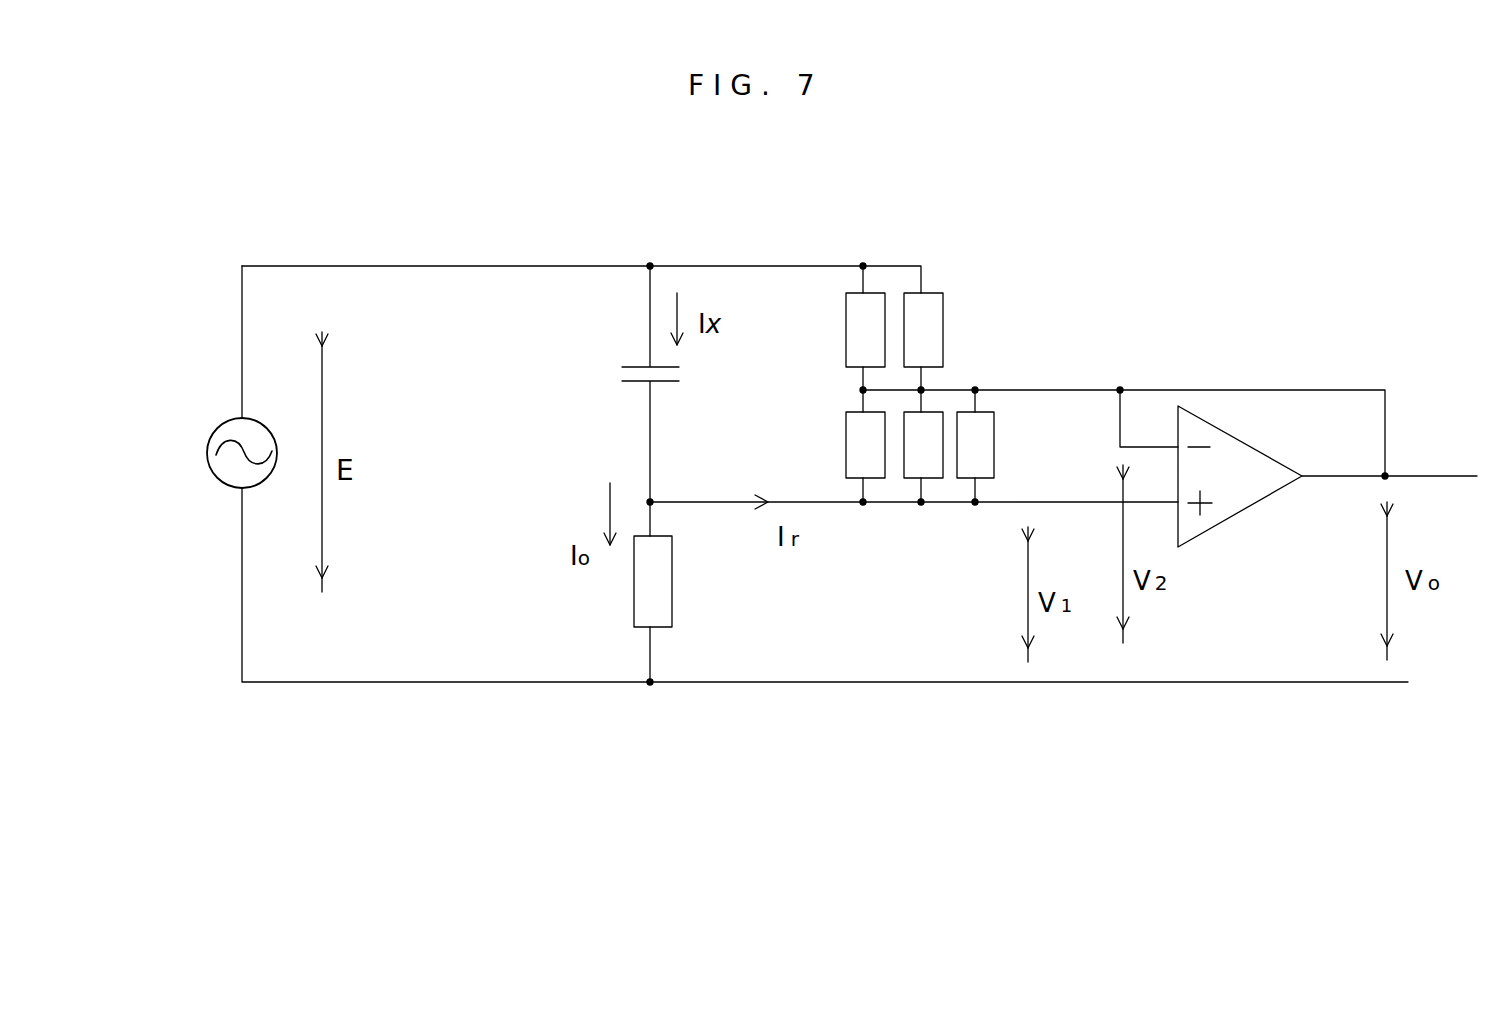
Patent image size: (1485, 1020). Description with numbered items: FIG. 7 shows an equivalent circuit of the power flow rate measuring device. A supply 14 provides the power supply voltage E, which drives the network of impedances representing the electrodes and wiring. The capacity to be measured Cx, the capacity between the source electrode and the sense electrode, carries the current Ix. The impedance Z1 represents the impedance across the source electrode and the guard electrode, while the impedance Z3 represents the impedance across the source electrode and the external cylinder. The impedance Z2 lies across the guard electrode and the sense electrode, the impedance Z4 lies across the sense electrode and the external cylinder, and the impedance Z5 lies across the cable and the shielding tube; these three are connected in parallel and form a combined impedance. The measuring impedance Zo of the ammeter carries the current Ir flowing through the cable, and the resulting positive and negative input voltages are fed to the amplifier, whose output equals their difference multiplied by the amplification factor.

The AC signal source 14 is at (218, 478).
The capacity to be measured Cx is at (663, 384).
The measuring impedance Zo is at (676, 592).
The impedance across source electrode and guard electrode Z1 is at (845, 328).
The impedance across guard electrode and sense electrode Z2 is at (845, 446).
The impedance across source electrode and external cylinder Z3 is at (948, 341).
The impedance across sense electrode and external cylinder Z4 is at (923, 446).
The impedance across cable and shielding tube Z5 is at (999, 446).